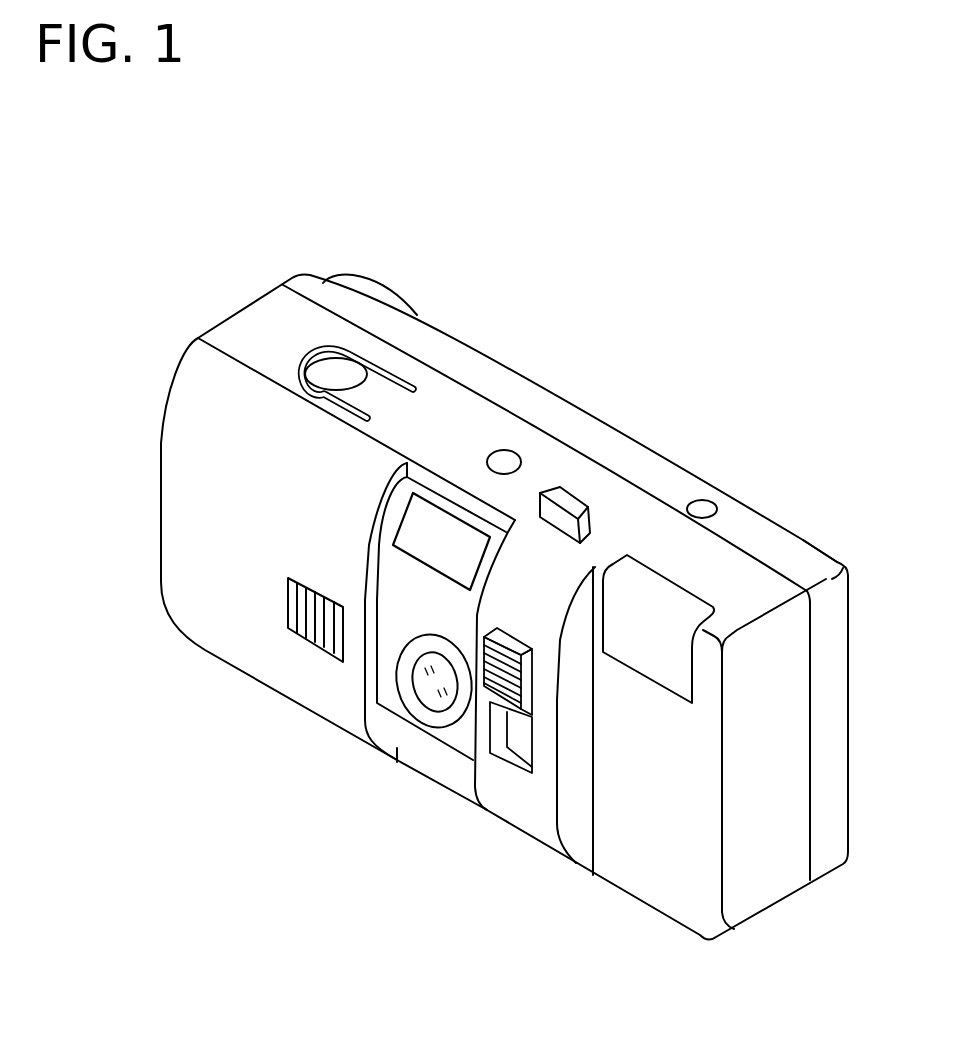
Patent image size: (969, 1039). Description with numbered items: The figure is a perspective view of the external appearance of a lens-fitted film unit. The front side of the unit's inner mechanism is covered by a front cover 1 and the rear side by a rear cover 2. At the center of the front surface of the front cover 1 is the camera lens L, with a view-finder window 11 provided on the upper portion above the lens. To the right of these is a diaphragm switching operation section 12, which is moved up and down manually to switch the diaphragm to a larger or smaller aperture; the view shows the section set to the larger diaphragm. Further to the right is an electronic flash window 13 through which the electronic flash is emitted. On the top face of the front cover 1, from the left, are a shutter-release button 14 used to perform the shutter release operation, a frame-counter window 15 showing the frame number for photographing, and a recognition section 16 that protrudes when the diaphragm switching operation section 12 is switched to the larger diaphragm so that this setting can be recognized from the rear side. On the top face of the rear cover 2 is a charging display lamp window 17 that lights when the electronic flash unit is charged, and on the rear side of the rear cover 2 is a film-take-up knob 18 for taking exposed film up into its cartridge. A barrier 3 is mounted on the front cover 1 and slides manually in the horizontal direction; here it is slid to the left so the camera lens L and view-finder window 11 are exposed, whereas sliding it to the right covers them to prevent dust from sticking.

The front cover 1 is at (653, 852).
The rear cover 2 is at (567, 413).
The barrier 3 is at (250, 642).
The view-finder window 11 is at (440, 537).
The diaphragm switching operation section 12 is at (520, 727).
The electronic flash window 13 is at (688, 600).
The shutter-release button 14 is at (327, 370).
The frame-counter window 15 is at (503, 450).
The recognition section 16 is at (572, 493).
The charging display lamp window 17 is at (701, 500).
The film-take-up knob 18 is at (372, 280).
The camera lens L is at (428, 698).